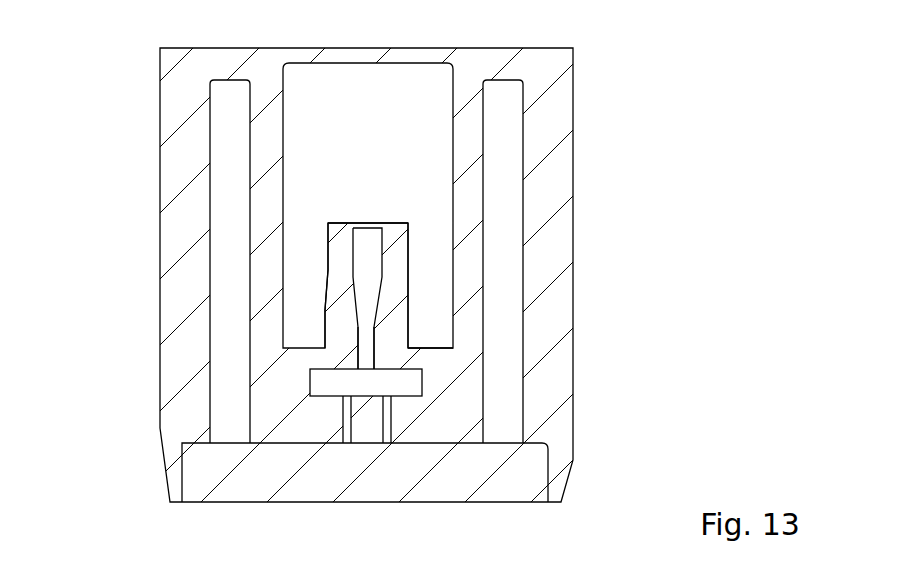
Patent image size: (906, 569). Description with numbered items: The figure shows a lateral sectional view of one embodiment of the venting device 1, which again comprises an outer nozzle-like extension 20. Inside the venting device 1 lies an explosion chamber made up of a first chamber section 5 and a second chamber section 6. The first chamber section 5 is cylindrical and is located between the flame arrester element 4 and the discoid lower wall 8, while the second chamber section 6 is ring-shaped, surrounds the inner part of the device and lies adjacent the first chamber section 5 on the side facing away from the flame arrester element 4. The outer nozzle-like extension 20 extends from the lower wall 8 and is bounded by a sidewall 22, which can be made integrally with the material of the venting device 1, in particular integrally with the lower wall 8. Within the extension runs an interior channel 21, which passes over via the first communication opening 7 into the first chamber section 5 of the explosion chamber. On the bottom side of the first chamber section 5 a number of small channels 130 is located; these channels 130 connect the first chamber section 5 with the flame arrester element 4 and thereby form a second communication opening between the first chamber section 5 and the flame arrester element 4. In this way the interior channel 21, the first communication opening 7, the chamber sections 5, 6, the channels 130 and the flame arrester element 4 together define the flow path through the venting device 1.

The venting device 1 is at (127, 120).
The flame arrester element 4 is at (473, 478).
The first chamber section 5 is at (400, 382).
The second chamber section 6 is at (507, 260).
The first communication opening 7 is at (360, 370).
The discoid lower wall 8 is at (430, 346).
The outer nozzle-like extension 20 is at (337, 223).
The interior channel 21 is at (364, 255).
The sidewall 22 is at (333, 288).
The small channels 130 is at (388, 412).